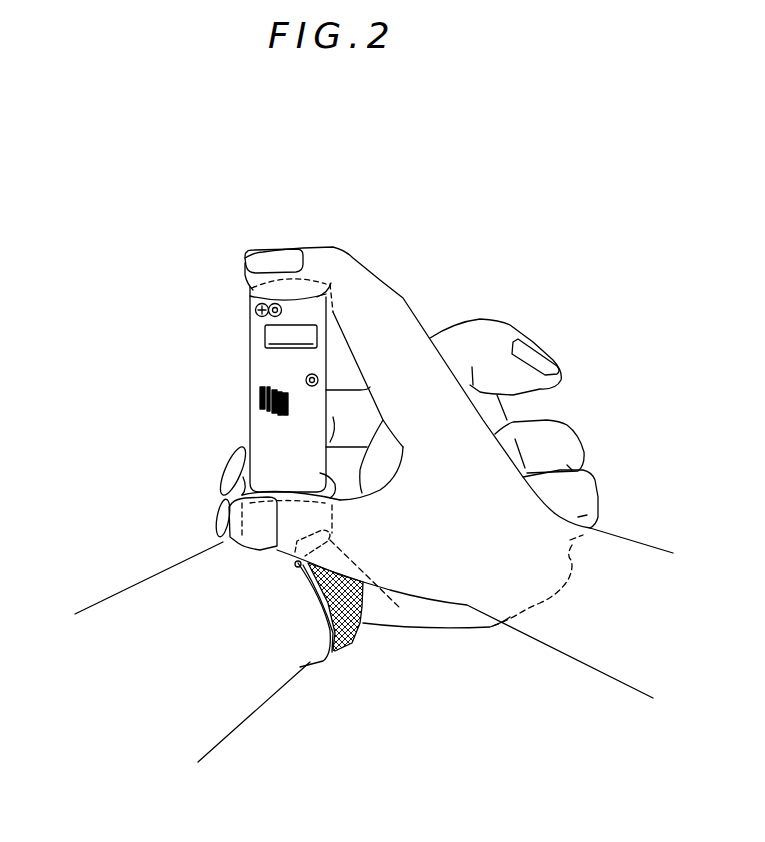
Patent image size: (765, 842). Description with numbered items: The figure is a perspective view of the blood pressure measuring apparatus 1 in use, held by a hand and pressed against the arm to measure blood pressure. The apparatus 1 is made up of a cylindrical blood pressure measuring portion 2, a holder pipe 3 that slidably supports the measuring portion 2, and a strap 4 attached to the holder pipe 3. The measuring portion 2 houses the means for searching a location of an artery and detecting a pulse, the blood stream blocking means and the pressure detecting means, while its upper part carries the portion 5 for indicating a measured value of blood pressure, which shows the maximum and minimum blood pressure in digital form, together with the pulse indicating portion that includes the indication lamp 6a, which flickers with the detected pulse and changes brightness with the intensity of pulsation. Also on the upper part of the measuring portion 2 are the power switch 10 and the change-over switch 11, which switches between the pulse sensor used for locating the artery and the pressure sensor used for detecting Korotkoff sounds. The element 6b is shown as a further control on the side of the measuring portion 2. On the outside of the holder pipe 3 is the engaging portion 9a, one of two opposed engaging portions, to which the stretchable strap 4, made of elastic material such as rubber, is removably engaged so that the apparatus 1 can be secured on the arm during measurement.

The blood pressure measuring apparatus 1 is at (182, 475).
The blood pressure measuring portion 2 is at (260, 427).
The holder pipe 3 is at (223, 542).
The strap 4 is at (347, 647).
The portion for indicating a measured value of blood pressure 5 is at (262, 329).
The indication lamp 6a is at (260, 393).
The push button 6b is at (317, 377).
The engaging portion 9a is at (400, 608).
The power switch 10 is at (257, 306).
The change-over switch 11 is at (276, 303).